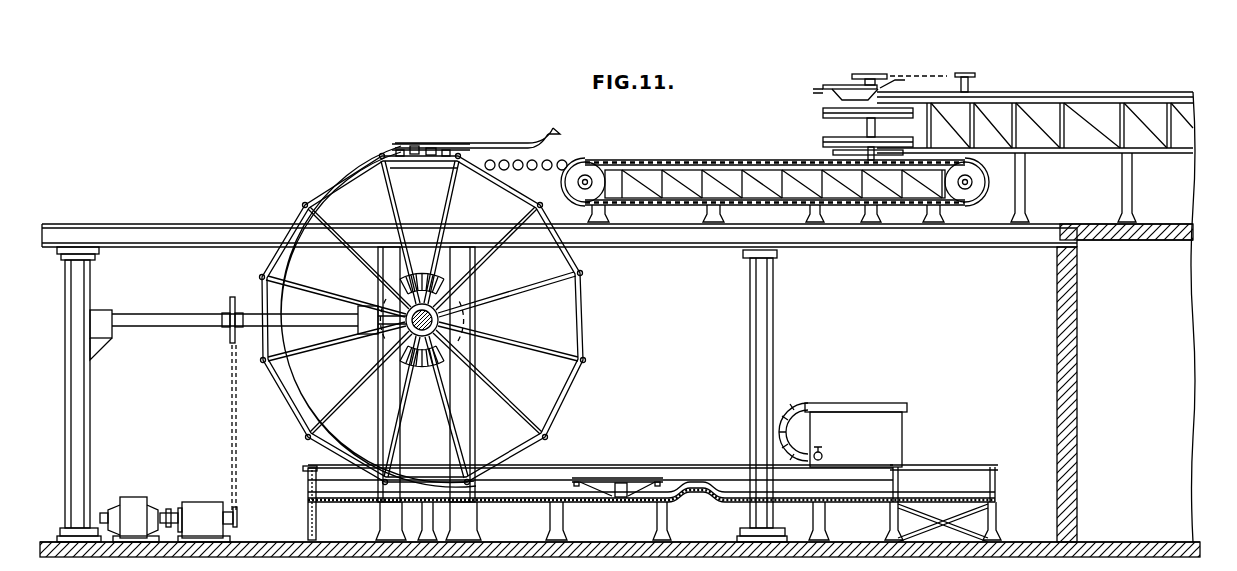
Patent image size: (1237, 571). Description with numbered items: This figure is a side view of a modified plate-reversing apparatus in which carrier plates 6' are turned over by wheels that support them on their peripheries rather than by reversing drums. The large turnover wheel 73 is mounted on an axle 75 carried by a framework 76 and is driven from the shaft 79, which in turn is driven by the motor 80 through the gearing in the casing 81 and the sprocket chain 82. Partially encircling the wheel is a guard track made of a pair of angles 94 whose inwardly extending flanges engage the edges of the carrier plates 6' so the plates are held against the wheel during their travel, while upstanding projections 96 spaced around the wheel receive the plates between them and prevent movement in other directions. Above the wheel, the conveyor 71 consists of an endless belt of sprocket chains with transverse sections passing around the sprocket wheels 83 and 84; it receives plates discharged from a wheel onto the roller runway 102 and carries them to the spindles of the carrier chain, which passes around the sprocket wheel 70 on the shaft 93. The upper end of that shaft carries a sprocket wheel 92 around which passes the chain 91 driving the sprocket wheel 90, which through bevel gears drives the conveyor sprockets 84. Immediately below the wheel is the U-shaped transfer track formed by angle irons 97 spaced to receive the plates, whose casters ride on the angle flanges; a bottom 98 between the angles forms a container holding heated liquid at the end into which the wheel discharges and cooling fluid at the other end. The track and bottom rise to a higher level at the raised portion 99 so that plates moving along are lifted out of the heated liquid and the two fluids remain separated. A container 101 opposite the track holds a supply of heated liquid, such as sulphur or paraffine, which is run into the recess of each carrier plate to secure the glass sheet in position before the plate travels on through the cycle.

The carrier plate 6' is at (435, 140).
The sprocket wheel 70 is at (824, 114).
The conveyor 71 is at (685, 170).
The turnover wheel 73 is at (332, 192).
The axle 75 is at (470, 318).
The framework 76 is at (482, 428).
The shaft 79 is at (201, 311).
The motor 80 is at (138, 498).
The casing 81 is at (200, 506).
The sprocket chain 82 is at (232, 432).
The sprocket wheel 83 is at (588, 170).
The sprocket wheel 84 is at (975, 186).
The sprocket wheel 90 is at (975, 75).
The chain 91 is at (918, 63).
The sprocket wheel 92 is at (866, 78).
The shaft 93 is at (860, 127).
The guard track angles 94 is at (283, 217).
The upstanding projections 96 is at (586, 274).
The angle irons 97 is at (735, 485).
The bottom 98 is at (617, 498).
The raised portion 99 is at (692, 478).
The container 101 is at (887, 430).
The roller runway 102 is at (518, 163).